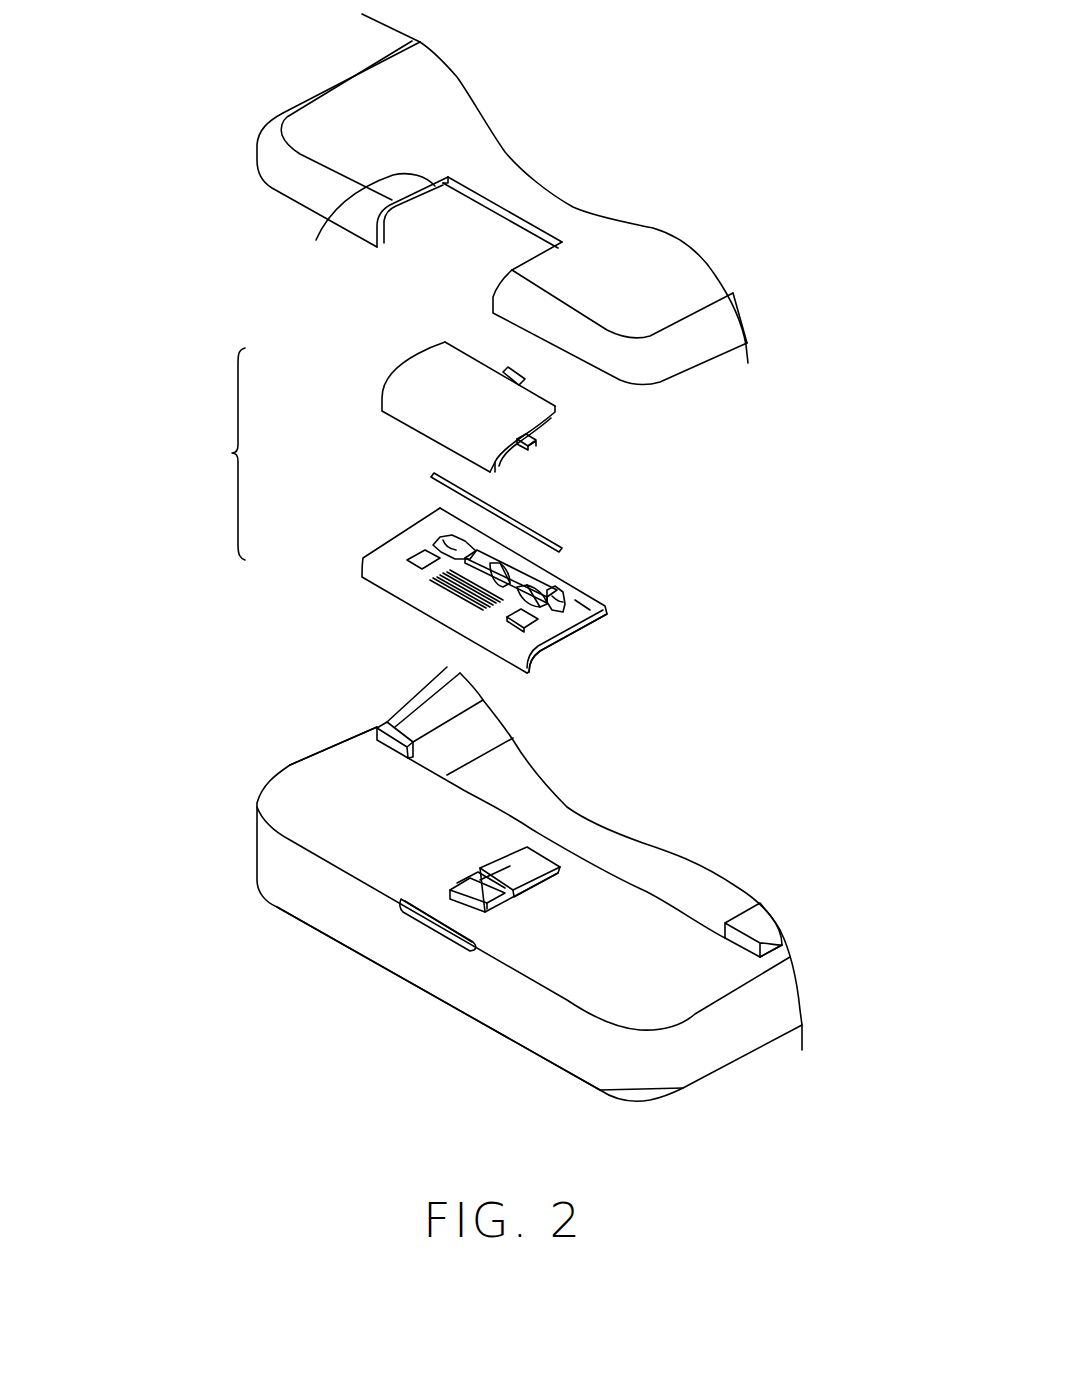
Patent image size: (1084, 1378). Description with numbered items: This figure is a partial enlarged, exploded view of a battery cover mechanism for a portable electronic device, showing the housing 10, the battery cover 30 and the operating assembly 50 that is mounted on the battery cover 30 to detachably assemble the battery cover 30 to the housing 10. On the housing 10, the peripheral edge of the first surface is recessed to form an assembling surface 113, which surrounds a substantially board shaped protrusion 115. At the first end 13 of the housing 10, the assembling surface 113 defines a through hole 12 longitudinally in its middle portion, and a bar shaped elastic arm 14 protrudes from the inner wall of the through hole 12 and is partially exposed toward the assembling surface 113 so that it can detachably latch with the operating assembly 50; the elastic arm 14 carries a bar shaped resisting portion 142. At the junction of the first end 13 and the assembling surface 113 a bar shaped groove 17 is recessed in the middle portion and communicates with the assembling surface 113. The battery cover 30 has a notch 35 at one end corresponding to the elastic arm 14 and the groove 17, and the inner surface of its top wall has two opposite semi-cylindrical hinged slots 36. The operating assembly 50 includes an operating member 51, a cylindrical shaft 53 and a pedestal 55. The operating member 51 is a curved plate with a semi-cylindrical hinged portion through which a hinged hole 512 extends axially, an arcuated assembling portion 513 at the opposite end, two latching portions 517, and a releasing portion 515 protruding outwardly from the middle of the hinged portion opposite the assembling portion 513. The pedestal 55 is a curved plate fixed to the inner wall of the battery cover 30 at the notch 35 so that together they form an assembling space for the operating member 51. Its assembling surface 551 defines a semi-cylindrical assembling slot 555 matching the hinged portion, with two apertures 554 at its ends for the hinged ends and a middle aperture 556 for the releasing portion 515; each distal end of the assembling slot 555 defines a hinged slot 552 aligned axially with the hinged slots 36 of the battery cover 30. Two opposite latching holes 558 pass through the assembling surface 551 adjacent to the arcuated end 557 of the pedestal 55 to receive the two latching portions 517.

The housing 10 is at (322, 960).
The recessed assembling surface 113 is at (333, 807).
The board shaped protrusion 115 is at (397, 737).
The through hole 12 is at (457, 870).
The first end 13 is at (740, 1020).
The elastic arm 14 is at (523, 863).
The resisting portion 142 is at (457, 870).
The groove 17 is at (435, 923).
The battery cover 30 is at (311, 79).
The notch 35 is at (457, 233).
The hinged slots 36 is at (370, 223).
The operating assembly 50 is at (221, 454).
The operating member 51 is at (360, 386).
The hinged hole 512 is at (556, 420).
The assembling portion 513 is at (485, 450).
The releasing portion 515 is at (527, 375).
The latching portions 517 is at (531, 445).
The cylindrical shaft 53 is at (408, 468).
The pedestal 55 is at (342, 556).
The assembling surface 551 is at (585, 608).
The hinged slot 552 is at (432, 537).
The apertures 554 is at (477, 537).
The assembling slot 555 is at (527, 586).
The middle aperture 556 is at (517, 558).
The arcuated end 557 is at (540, 672).
The latching holes 558 is at (410, 568).